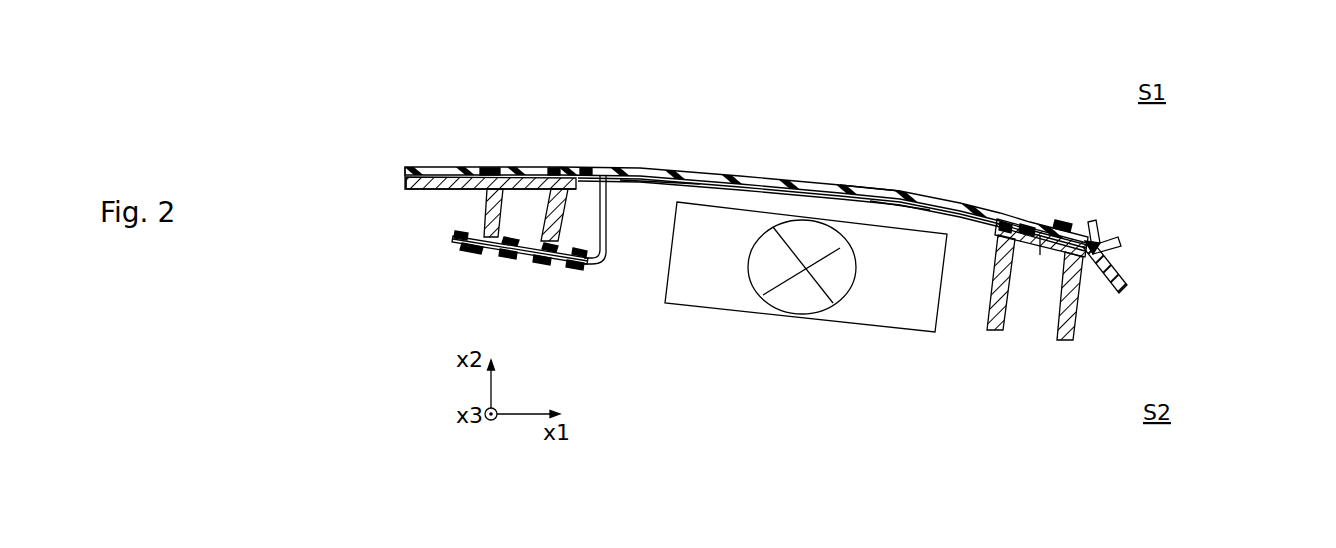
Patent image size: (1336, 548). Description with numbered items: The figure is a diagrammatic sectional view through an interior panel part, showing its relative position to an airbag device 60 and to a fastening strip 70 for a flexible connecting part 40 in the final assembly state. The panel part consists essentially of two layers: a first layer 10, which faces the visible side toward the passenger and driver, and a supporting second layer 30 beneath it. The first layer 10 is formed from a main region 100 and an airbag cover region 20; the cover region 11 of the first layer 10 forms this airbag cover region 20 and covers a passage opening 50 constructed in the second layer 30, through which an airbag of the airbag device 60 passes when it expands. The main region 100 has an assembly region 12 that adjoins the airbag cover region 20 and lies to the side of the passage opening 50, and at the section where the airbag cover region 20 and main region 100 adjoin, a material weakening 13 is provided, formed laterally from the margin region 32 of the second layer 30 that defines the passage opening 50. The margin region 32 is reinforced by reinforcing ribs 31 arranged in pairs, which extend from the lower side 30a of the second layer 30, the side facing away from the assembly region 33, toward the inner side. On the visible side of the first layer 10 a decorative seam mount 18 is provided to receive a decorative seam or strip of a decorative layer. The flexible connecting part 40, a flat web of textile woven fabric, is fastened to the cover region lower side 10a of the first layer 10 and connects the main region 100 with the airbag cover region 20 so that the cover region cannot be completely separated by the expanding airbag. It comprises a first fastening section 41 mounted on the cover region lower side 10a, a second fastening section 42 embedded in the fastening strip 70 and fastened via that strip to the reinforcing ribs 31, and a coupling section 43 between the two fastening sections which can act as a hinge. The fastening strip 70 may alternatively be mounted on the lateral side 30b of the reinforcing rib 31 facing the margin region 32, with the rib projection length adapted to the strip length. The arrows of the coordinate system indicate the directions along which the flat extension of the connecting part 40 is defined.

The main region 100 is at (440, 143).
The first layer 10 is at (746, 209).
The cover region lower side 10a is at (643, 197).
The cover region 11 is at (800, 177).
The assembly region 12 is at (485, 168).
The material weakening 13 is at (553, 176).
The decorative seam mount 18 is at (1113, 223).
The airbag cover region 20 is at (866, 180).
The second layer 30 is at (450, 190).
The lower side 30a is at (424, 315).
The lateral side 30b is at (525, 283).
The reinforcing ribs 31 is at (1070, 370).
The margin region 32 is at (587, 176).
The assembly region 33 is at (422, 188).
The flexible connecting part 40 is at (728, 180).
The first fastening section 41 is at (896, 186).
The second fastening section 42 is at (525, 266).
The coupling section 43 is at (606, 176).
The passage opening 50 is at (959, 232).
The airbag device 60 is at (802, 318).
The fastening strip 70 is at (510, 268).